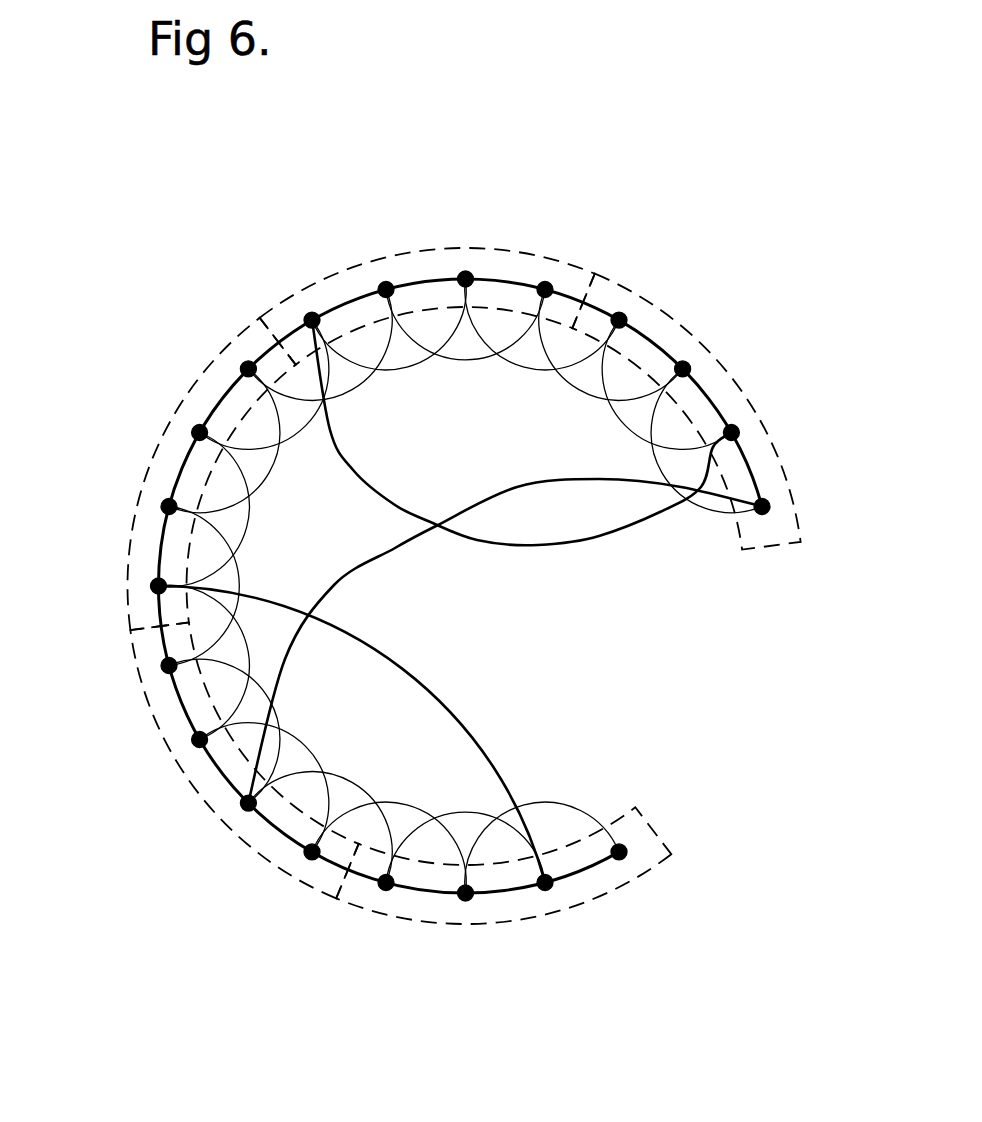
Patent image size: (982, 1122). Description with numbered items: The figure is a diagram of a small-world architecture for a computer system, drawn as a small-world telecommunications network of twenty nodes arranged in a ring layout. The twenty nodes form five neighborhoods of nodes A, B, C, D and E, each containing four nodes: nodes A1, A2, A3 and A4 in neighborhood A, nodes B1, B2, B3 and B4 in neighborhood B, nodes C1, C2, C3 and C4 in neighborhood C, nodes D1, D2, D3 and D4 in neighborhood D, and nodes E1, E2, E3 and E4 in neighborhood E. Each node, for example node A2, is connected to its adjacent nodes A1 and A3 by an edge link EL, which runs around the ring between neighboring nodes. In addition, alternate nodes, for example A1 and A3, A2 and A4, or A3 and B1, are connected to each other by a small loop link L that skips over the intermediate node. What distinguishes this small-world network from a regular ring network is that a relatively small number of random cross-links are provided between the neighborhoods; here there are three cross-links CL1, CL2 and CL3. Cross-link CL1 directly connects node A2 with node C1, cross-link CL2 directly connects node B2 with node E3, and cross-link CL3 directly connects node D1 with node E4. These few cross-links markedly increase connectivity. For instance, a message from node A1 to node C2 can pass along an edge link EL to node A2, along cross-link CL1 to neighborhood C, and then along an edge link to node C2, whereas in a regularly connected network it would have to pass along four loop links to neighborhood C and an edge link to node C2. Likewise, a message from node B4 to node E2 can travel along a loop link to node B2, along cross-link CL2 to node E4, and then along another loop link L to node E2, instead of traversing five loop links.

The edge link EL is at (227, 397).
The neighborhood of nodes A is at (621, 796).
The neighborhood of nodes B is at (177, 816).
The neighborhood of nodes C is at (142, 453).
The neighborhood of nodes D is at (511, 225).
The neighborhood of nodes E is at (741, 369).
The node A1 is at (619, 852).
The node A2 is at (545, 882).
The node A3 is at (466, 893).
The node A4 is at (386, 882).
The node B1 is at (312, 852).
The node B2 is at (248, 803).
The node B3 is at (200, 740).
The node B4 is at (169, 666).
The node C1 is at (158, 586).
The node C2 is at (169, 506).
The node C3 is at (200, 432).
The node C4 is at (248, 369).
The node D1 is at (312, 320).
The node D2 is at (386, 289).
The node D3 is at (466, 279).
The node D4 is at (545, 289).
The node E1 is at (619, 320).
The node E2 is at (683, 369).
The node E3 is at (731, 432).
The node E4 is at (762, 506).
The small loop link L is at (303, 742).
The cross-link CL1 is at (470, 722).
The cross-link CL2 is at (393, 548).
The cross-link CL3 is at (623, 530).